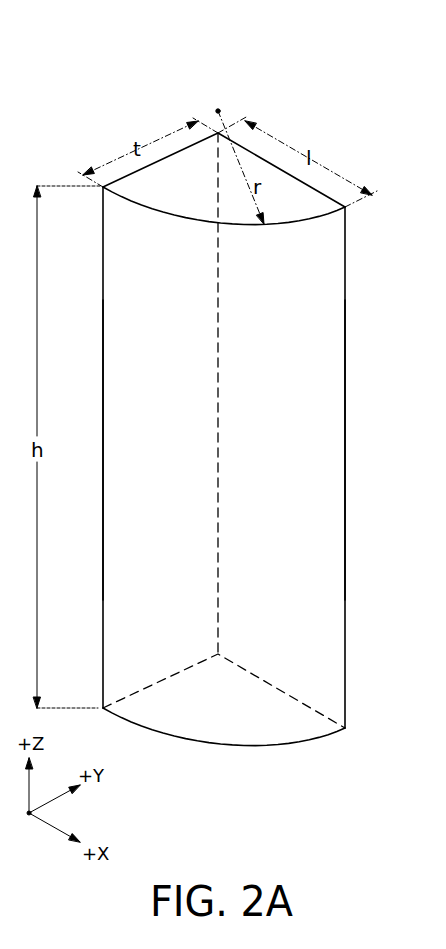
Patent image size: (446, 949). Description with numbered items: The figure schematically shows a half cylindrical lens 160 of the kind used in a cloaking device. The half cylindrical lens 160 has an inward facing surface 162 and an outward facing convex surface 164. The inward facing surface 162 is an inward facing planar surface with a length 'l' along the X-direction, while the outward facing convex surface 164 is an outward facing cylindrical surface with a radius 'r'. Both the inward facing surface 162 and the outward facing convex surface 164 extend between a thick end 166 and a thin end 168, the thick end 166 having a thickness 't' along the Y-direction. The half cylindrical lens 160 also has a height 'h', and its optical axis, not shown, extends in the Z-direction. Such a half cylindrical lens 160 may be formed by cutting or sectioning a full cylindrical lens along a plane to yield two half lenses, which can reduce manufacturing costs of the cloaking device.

The half cylindrical lens 160 is at (234, 403).
The inward facing surface 162 is at (312, 310).
The outward facing convex surface 164 is at (262, 730).
The thick end 166 is at (137, 387).
The thin end 168 is at (345, 448).